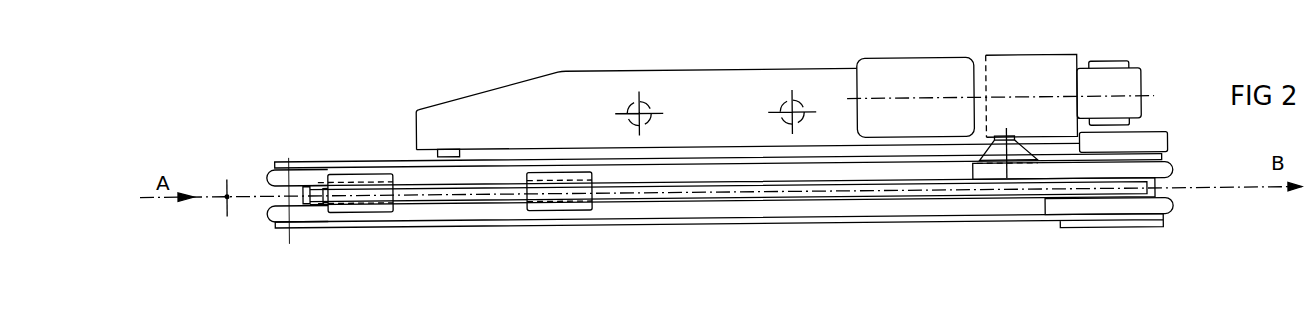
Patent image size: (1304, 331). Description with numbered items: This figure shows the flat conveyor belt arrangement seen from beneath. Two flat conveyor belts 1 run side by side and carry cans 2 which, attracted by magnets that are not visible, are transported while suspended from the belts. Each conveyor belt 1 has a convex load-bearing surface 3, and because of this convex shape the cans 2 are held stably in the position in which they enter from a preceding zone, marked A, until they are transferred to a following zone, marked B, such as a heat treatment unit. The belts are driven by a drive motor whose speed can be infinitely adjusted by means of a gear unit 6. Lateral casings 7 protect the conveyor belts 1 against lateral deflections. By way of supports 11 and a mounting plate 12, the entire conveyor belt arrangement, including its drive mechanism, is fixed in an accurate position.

The conveyor belt 1 is at (740, 209).
The can 2 is at (379, 207).
The convex load-bearing surface 3 is at (268, 177).
The gear unit 6 is at (1000, 148).
The lateral casing 7 is at (312, 167).
The support 11 is at (635, 108).
The mounting plate 12 is at (728, 91).